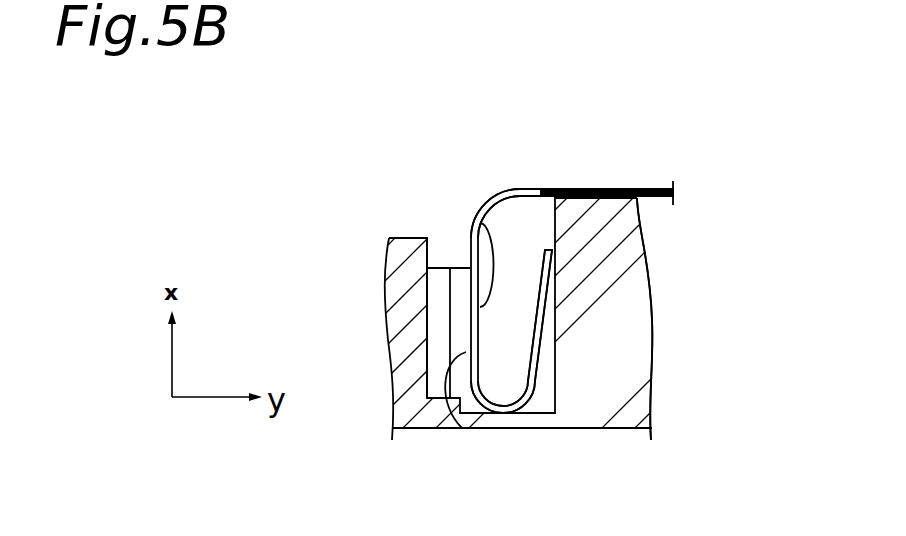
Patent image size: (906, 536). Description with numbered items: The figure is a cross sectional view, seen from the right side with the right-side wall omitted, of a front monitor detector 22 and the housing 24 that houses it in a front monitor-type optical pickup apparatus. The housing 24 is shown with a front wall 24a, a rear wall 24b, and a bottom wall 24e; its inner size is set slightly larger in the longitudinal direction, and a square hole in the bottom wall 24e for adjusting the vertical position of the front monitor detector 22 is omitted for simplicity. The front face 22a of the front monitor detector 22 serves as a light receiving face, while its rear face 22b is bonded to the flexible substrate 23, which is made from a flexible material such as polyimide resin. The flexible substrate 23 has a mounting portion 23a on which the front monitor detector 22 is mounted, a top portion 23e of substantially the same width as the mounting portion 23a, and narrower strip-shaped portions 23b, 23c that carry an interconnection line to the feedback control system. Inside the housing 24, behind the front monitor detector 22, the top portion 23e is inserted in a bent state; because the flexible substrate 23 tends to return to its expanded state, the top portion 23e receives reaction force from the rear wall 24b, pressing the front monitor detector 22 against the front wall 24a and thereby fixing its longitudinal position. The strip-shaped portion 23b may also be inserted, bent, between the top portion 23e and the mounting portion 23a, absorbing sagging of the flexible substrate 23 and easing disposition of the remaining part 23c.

The front monitor detector 22 is at (442, 277).
The front face 22a is at (425, 318).
The rear face 22b is at (482, 218).
The flexible substrate 23 is at (527, 192).
The mounting portion 23a is at (447, 402).
The strip-shaped portion 23b is at (535, 190).
The strip-shaped portion 23c is at (618, 190).
The top portion 23e is at (540, 410).
The housing 24 is at (643, 262).
The front wall 24a is at (388, 270).
The rear wall 24b is at (652, 302).
The bottom wall 24e is at (423, 418).